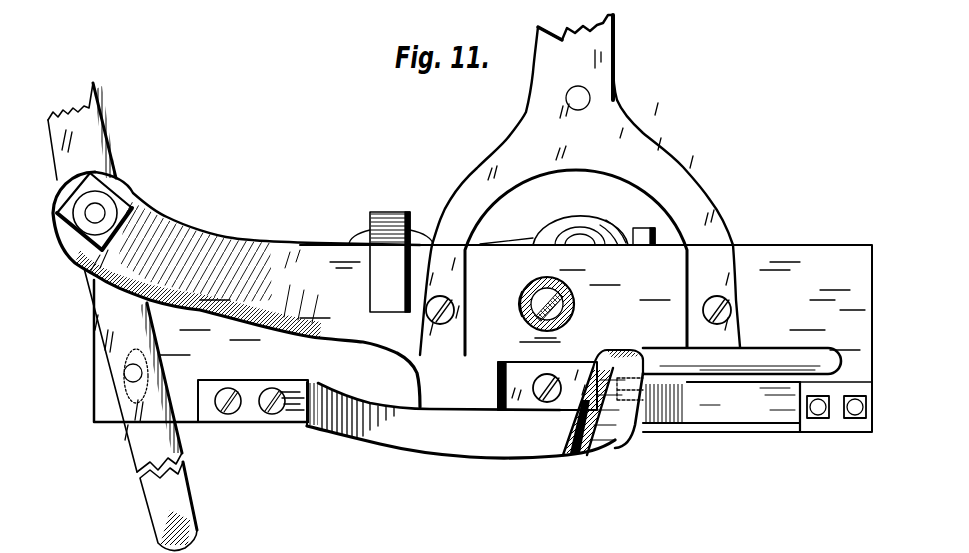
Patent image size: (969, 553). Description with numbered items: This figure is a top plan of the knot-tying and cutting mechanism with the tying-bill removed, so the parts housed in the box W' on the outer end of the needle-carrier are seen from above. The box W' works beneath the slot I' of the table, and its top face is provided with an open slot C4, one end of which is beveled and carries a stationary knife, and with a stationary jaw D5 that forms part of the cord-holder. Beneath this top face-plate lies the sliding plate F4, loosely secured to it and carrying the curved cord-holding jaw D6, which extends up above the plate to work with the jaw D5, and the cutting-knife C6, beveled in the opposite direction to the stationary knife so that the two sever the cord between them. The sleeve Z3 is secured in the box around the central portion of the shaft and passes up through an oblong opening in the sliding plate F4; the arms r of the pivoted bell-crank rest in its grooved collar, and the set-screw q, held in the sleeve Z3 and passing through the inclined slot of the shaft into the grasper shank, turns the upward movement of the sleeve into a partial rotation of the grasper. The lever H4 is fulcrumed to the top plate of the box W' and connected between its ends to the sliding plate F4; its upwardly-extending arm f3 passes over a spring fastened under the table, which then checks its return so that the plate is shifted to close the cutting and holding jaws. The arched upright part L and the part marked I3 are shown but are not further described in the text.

The yoke arm L is at (580, 185).
The box W' is at (483, 322).
The lever H4 is at (104, 302).
The upwardly-extending arm of lever f3 is at (158, 537).
The sliding plate F4 is at (336, 354).
The arms of bell-crank lever r is at (589, 226).
The slot I' is at (547, 291).
The set-screw q is at (556, 300).
The sleeve Z3 is at (523, 305).
The pin I3 is at (540, 340).
The open slot C4 is at (505, 380).
The cutting-knife C6 is at (572, 373).
The cord-holding jaw D6 is at (574, 401).
The stationary jaw D5 is at (754, 407).